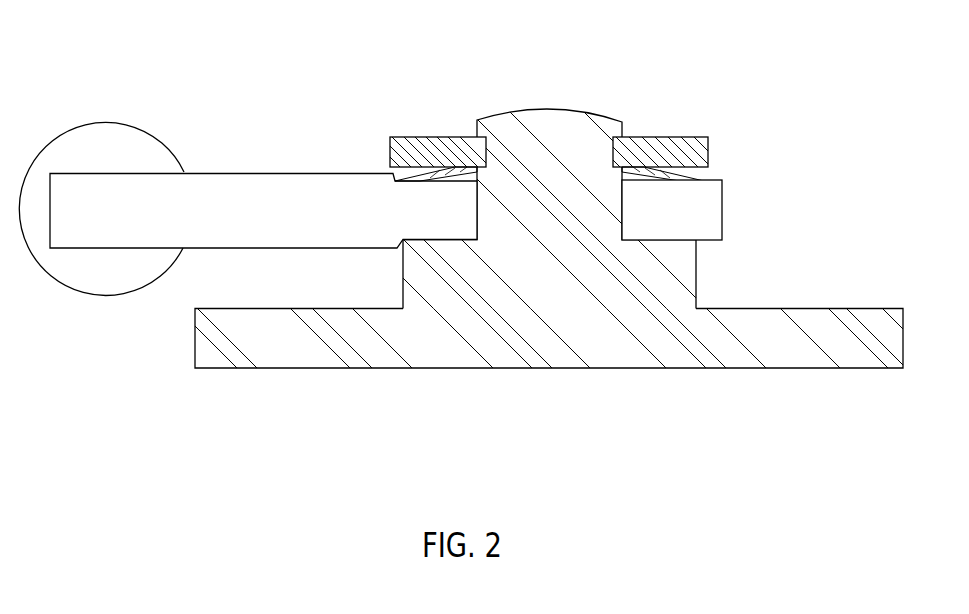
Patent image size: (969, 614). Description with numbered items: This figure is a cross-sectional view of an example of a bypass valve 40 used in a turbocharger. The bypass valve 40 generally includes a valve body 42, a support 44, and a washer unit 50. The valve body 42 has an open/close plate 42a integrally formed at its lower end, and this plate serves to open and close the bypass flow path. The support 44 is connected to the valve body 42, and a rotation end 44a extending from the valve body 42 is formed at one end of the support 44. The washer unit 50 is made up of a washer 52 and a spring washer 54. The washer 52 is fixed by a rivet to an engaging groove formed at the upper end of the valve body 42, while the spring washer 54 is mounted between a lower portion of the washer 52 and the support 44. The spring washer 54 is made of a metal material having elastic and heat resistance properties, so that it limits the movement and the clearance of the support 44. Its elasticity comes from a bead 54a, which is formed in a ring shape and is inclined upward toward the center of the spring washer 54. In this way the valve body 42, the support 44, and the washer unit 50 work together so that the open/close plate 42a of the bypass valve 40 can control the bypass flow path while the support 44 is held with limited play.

The bypass valve 40 is at (258, 70).
The valve body 42 is at (590, 276).
The open/close plate 42a is at (770, 338).
The support 44 is at (248, 170).
The rotation end 44a is at (70, 155).
The washer unit 50 is at (589, 163).
The washer 52 is at (710, 142).
The spring washer 54 is at (721, 174).
The bead 54a is at (672, 195).